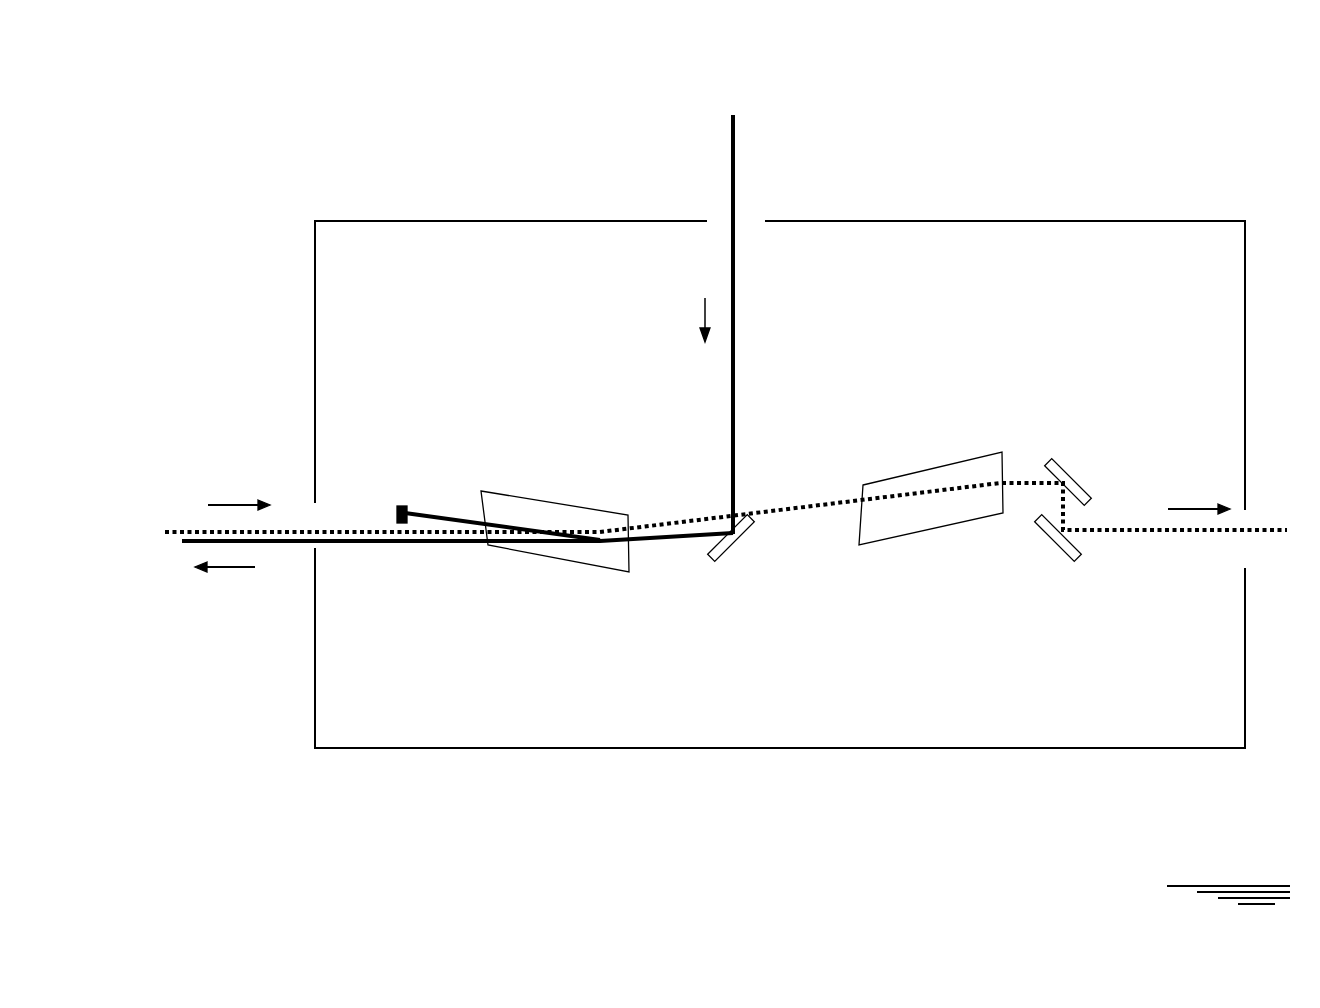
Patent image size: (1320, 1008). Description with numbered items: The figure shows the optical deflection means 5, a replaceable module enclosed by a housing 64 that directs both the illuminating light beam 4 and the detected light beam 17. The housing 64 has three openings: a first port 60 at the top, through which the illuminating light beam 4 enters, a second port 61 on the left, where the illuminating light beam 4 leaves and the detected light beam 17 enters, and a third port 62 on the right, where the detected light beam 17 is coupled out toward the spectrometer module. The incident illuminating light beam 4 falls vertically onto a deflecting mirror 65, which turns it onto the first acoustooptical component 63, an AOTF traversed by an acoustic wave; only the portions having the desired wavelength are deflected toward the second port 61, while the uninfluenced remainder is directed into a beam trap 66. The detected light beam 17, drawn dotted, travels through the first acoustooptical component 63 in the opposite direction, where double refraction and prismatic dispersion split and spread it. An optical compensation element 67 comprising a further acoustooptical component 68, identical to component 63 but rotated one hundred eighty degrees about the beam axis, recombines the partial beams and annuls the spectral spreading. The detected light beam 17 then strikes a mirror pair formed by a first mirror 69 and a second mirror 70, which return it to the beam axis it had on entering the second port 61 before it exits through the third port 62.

The illuminating light beam 4 is at (735, 177).
The optical deflection means 5 is at (1142, 98).
The detected light beam 17 is at (207, 528).
The first port 60 is at (722, 220).
The second port 61 is at (312, 518).
The third port 62 is at (1243, 519).
The first acoustooptical component 63 is at (585, 550).
The housing 64 is at (463, 748).
The deflecting mirror 65 is at (752, 540).
The beam trap 66 is at (400, 505).
The optical compensation element 67 is at (932, 436).
The further acoustooptical component 68 is at (915, 505).
The first mirror 69 is at (1062, 478).
The second mirror 70 is at (1066, 546).